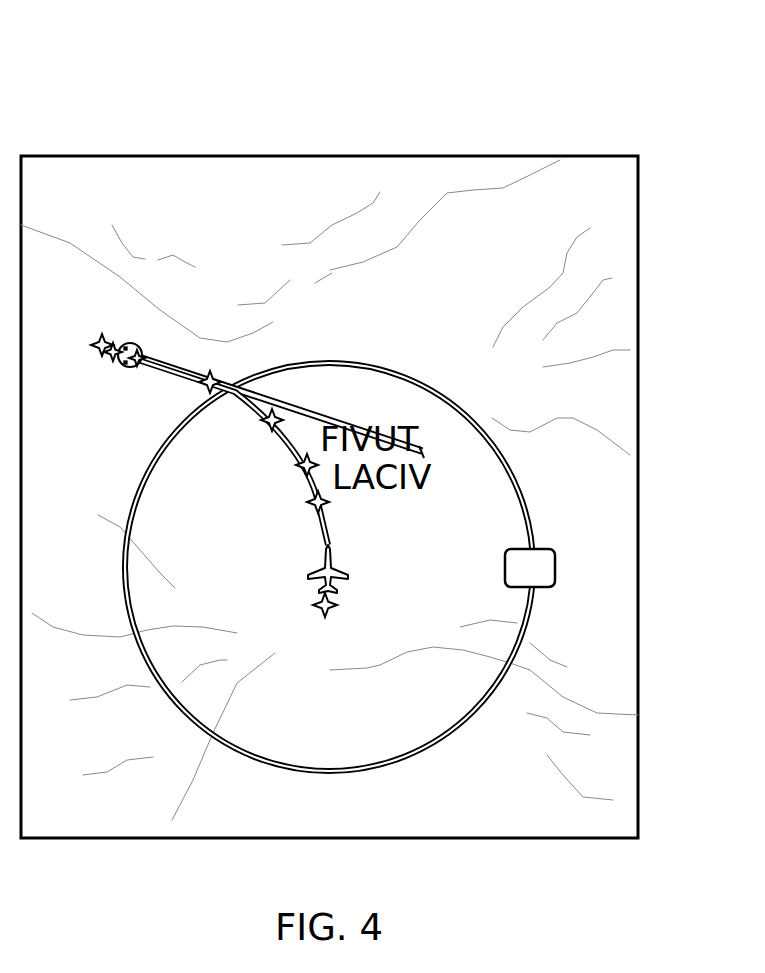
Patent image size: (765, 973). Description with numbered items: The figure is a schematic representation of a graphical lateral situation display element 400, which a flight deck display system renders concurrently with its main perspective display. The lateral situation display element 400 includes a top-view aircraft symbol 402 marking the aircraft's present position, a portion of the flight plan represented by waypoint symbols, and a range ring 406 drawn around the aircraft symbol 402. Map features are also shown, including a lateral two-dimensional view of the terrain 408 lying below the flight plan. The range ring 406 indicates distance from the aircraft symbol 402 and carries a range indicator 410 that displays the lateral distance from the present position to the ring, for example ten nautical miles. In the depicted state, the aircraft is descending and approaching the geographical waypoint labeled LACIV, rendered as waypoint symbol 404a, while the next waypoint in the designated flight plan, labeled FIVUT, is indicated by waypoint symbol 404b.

The lateral situation display element 400 is at (220, 103).
The top-view aircraft symbol 402 is at (333, 556).
The waypoint symbol 404a is at (316, 508).
The waypoint symbol 404b is at (304, 466).
The range ring 406 is at (453, 730).
The terrain 408 is at (603, 330).
The range indicator 410 is at (543, 588).